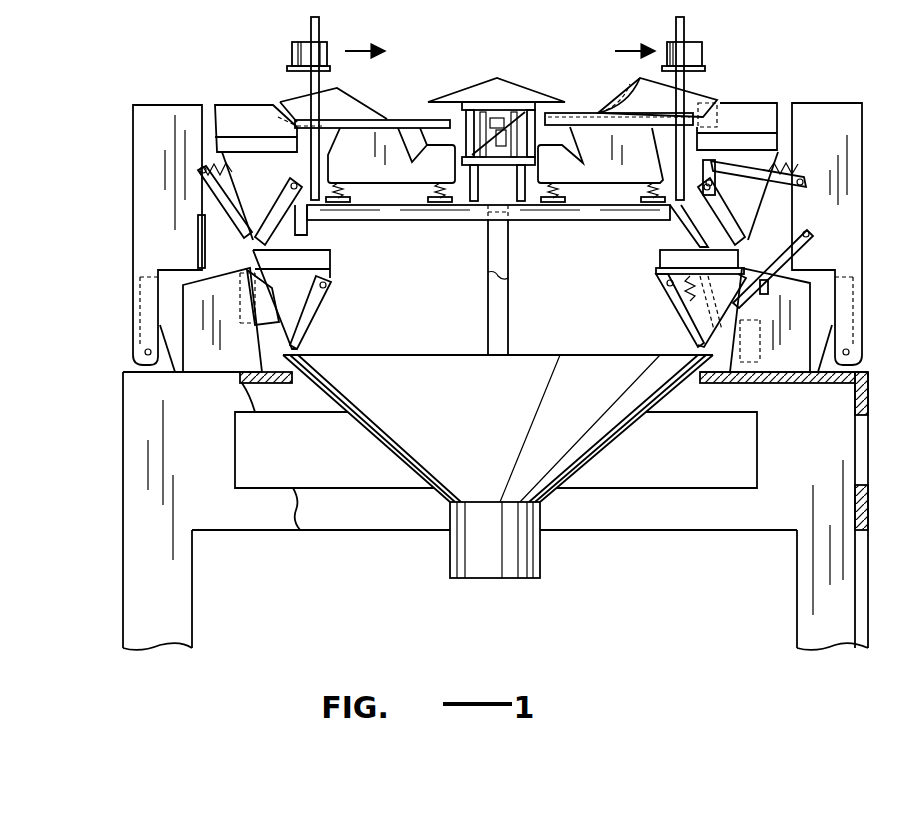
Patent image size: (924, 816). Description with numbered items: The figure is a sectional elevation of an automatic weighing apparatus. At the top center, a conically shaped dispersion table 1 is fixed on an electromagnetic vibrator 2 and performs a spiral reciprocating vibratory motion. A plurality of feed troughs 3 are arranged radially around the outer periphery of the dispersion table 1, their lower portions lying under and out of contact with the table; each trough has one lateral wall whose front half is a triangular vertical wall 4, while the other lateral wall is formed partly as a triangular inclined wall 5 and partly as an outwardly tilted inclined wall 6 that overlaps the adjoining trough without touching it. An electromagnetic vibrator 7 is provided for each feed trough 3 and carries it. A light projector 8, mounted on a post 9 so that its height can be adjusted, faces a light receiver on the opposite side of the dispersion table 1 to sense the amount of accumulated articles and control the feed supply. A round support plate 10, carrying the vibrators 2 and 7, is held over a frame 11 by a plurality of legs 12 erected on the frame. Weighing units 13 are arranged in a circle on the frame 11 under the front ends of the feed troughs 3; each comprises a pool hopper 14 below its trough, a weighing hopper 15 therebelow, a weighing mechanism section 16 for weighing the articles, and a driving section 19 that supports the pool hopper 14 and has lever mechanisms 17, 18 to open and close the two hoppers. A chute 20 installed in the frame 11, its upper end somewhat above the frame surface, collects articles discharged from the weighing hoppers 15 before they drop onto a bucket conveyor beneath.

The dispersion table 1 is at (504, 90).
The electromagnetic vibrator 2 is at (460, 113).
The feed trough 3 is at (360, 120).
The triangular vertical wall 4 is at (283, 100).
The triangular inclined wall 5 is at (693, 97).
The inclined wall 6 is at (580, 113).
The electromagnetic vibrator 7 is at (392, 183).
The light projector 8 is at (300, 43).
The post 9 is at (318, 28).
The round support plate 10 is at (437, 220).
The frame 11 is at (128, 394).
The leg 12 is at (307, 225).
The weighing unit 13 is at (127, 242).
The pool hopper 14 is at (228, 108).
The weighing hopper 15 is at (332, 274).
The weighing mechanism section 16 is at (190, 298).
The lever mechanism 17 is at (213, 198).
The lever mechanism 18 is at (196, 263).
The driving section 19 is at (145, 110).
The chute 20 is at (435, 367).